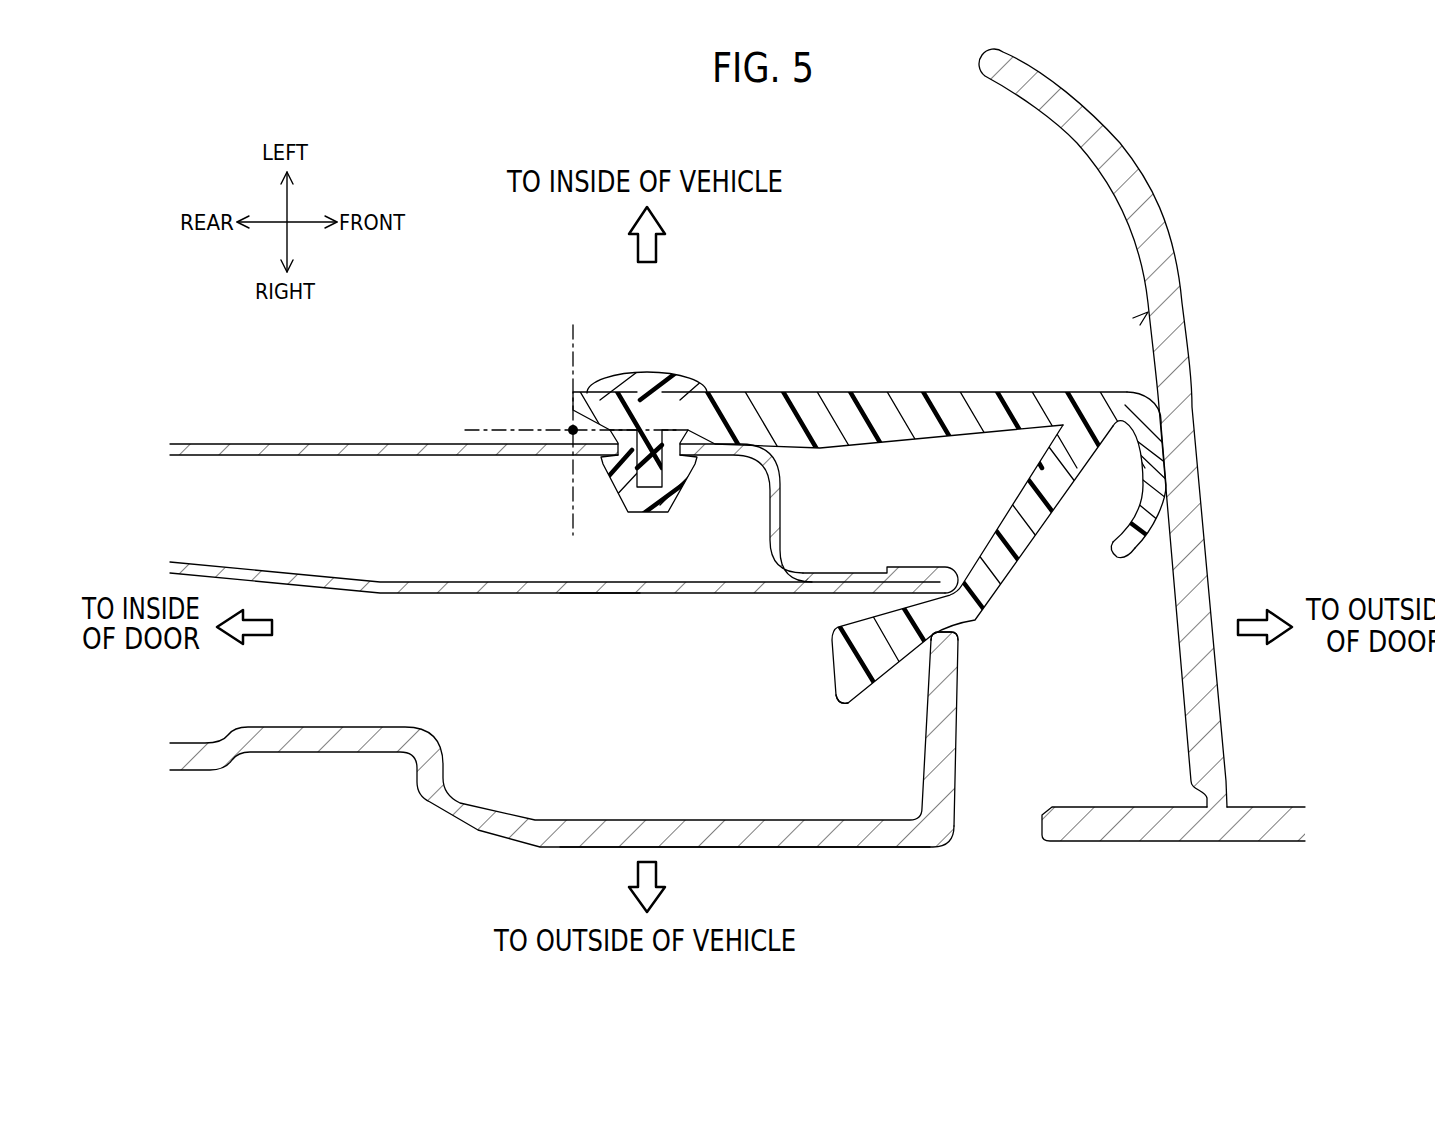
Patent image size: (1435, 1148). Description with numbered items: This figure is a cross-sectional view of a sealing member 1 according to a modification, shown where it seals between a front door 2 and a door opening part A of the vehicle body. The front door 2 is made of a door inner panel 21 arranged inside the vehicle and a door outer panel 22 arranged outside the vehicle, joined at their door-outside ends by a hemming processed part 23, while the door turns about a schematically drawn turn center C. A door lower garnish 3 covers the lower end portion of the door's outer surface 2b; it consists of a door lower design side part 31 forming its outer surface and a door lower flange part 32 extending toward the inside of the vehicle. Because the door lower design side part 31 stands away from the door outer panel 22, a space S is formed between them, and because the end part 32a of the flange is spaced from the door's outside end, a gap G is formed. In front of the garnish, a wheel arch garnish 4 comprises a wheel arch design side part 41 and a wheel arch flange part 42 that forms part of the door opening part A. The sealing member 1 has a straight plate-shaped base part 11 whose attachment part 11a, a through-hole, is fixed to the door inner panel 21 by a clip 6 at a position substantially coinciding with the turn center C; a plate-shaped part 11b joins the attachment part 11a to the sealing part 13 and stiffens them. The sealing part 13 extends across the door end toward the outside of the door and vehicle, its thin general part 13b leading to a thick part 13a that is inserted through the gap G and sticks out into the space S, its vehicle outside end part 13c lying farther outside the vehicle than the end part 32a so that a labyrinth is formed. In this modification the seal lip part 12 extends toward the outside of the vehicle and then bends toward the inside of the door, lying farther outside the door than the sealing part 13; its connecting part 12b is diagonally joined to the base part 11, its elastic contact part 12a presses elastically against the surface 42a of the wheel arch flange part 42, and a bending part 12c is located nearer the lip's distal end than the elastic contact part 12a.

The sealing member 1 is at (931, 505).
The front door 2 is at (579, 516).
The surface of the front door facing the outside of the vehicle 2b is at (596, 595).
The door lower garnish 3 is at (607, 779).
The wheel arch garnish 4 is at (1142, 502).
The clip 6 is at (607, 372).
The base part 11 is at (931, 505).
The attachment part 11a is at (656, 384).
The plate-shaped part 11b is at (910, 390).
The seal lip part 12 is at (1200, 524).
The elastic contact part 12a is at (1166, 458).
The connecting part 12b is at (1164, 412).
The bending part 12c is at (1142, 558).
The sealing part 13 is at (935, 596).
The thick part 13a is at (828, 668).
The general part 13b is at (1028, 584).
The vehicle outside end part 13c is at (838, 702).
The door inner panel 21 is at (348, 440).
The door outer panel 22 is at (340, 595).
The hemming processed part 23 is at (960, 565).
The door lower design side part 31 is at (843, 849).
The door lower flange part 32 is at (988, 729).
The end part of the door lower flange part facing the inside of the vehicle 32a is at (950, 643).
The wheel arch design side part 41 is at (1143, 843).
The wheel arch flange part 42 is at (1115, 428).
The surface of the wheel arch flange part facing the front door 42a is at (1140, 322).
The door opening part A is at (1186, 716).
The turn center C is at (568, 424).
The gap G is at (957, 628).
The space S is at (681, 713).